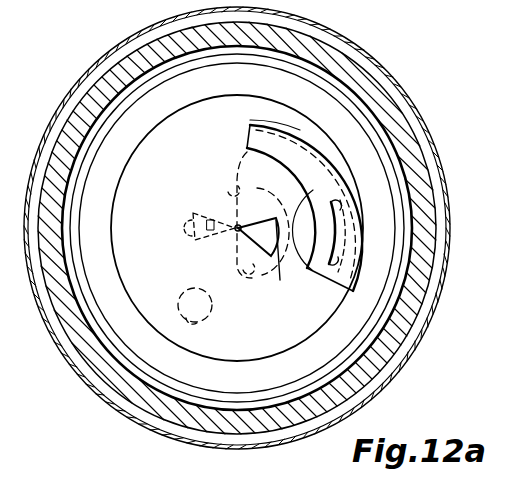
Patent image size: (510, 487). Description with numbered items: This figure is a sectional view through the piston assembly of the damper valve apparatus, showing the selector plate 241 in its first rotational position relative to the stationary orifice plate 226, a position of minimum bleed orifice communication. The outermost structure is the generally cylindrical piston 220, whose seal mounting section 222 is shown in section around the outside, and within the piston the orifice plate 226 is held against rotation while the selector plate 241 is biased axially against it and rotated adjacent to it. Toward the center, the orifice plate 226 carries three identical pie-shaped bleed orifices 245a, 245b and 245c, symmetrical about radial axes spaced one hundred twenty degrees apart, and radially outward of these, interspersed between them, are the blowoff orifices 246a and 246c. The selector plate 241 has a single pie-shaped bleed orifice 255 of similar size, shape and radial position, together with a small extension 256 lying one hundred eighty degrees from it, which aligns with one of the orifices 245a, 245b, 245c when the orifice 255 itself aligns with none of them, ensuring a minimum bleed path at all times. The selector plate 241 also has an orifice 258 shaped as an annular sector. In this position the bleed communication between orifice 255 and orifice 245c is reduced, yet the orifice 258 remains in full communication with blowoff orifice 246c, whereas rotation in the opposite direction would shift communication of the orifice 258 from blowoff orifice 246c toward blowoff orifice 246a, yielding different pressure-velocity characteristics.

The piston 220 is at (113, 76).
The seal mounting section 222 is at (367, 55).
The orifice plate 226 is at (193, 53).
The selector plate 241 is at (267, 50).
The pie-shaped orifice 245a is at (232, 234).
The pie-shaped orifice 245b is at (233, 212).
The pie-shaped orifice 245c is at (240, 240).
The blowoff orifice 246a is at (183, 320).
The blowoff orifice 246c is at (338, 211).
The pie-shaped bleed orifice 255 is at (263, 252).
The small extension 256 is at (205, 212).
The orifice 258 is at (298, 262).